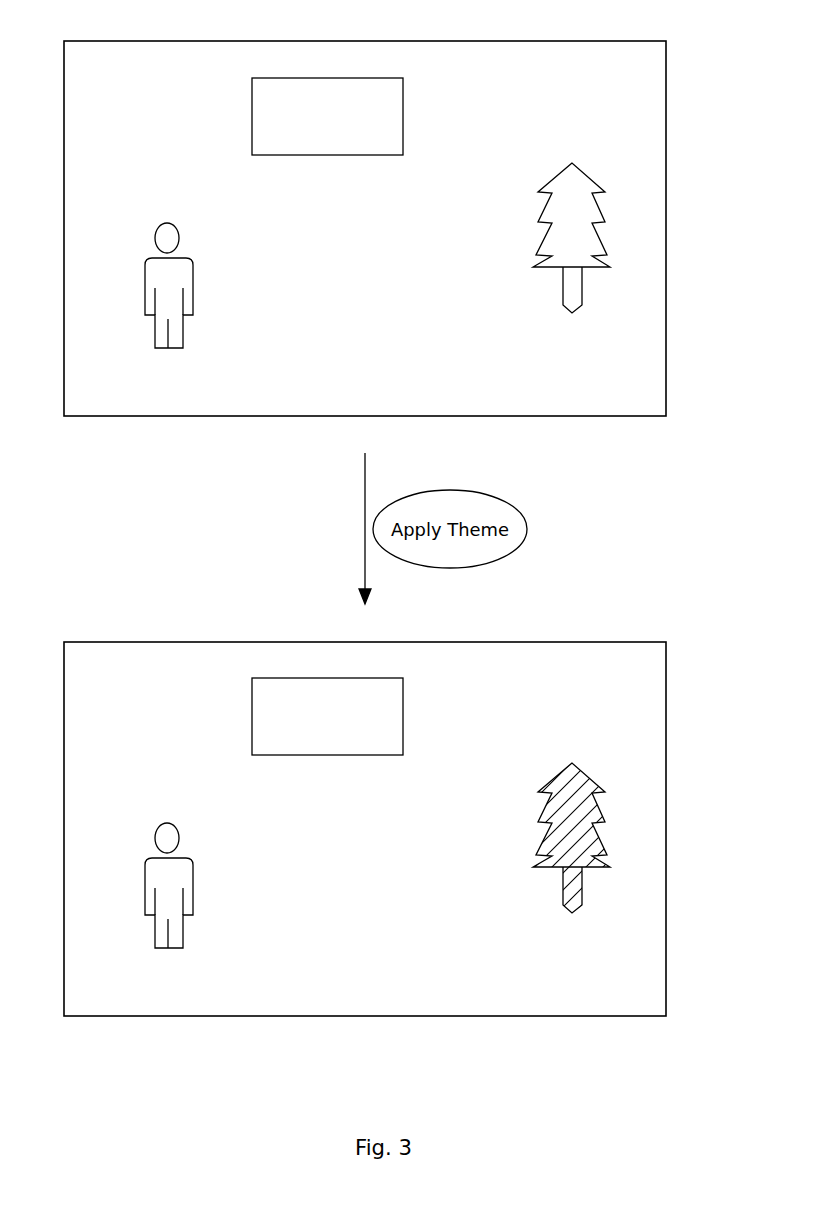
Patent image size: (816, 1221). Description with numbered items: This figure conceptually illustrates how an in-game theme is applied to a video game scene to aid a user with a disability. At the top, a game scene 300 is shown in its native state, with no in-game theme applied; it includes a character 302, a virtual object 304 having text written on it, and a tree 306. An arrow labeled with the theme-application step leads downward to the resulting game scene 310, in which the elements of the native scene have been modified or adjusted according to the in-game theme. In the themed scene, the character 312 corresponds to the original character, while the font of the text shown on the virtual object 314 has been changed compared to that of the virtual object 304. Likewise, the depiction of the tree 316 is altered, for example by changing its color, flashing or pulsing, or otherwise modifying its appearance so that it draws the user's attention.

The game scene 300 is at (666, 172).
The character 302 is at (190, 265).
The virtual object 304 is at (403, 120).
The tree 306 is at (580, 173).
The game scene 310 is at (666, 773).
The character 312 is at (190, 865).
The virtual object 314 is at (403, 720).
The tree 316 is at (580, 773).